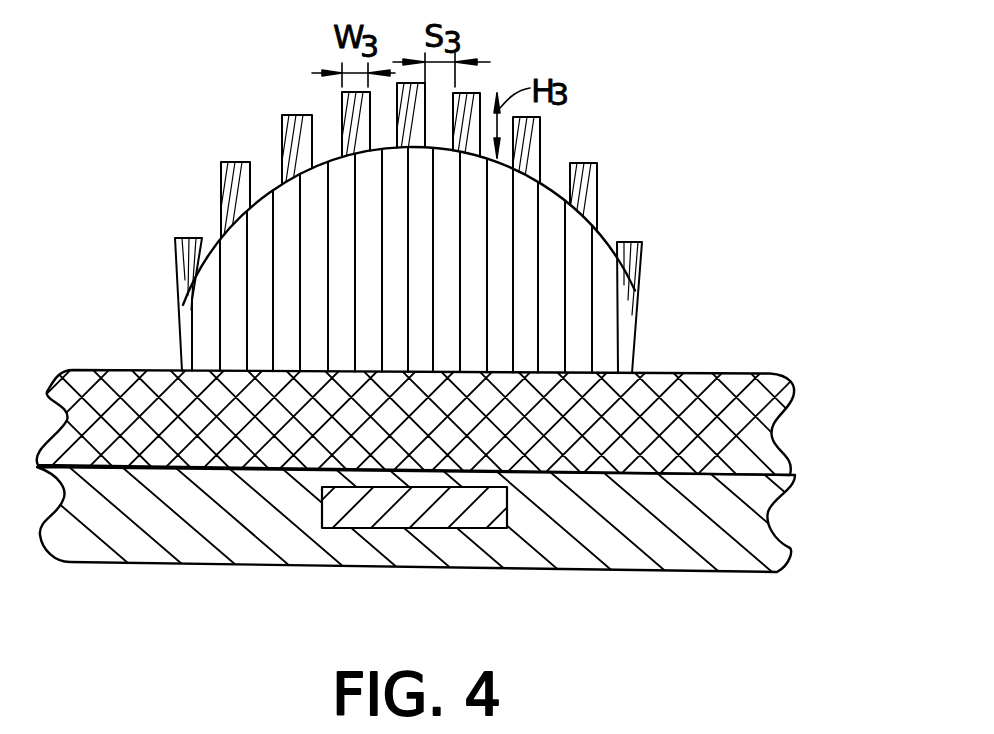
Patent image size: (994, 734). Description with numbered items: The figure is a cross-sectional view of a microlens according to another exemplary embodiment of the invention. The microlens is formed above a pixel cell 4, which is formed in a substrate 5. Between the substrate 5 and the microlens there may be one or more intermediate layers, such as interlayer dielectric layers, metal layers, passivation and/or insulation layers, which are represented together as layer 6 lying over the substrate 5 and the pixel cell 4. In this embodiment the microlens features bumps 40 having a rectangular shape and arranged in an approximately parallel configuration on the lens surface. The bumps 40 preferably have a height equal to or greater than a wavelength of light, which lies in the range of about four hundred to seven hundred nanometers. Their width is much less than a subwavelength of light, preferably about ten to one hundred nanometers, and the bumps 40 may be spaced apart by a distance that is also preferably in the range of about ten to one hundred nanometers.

The bumps 40 is at (582, 164).
The layer 6 is at (762, 435).
The substrate 5 is at (762, 530).
The pixel cell 4 is at (422, 515).